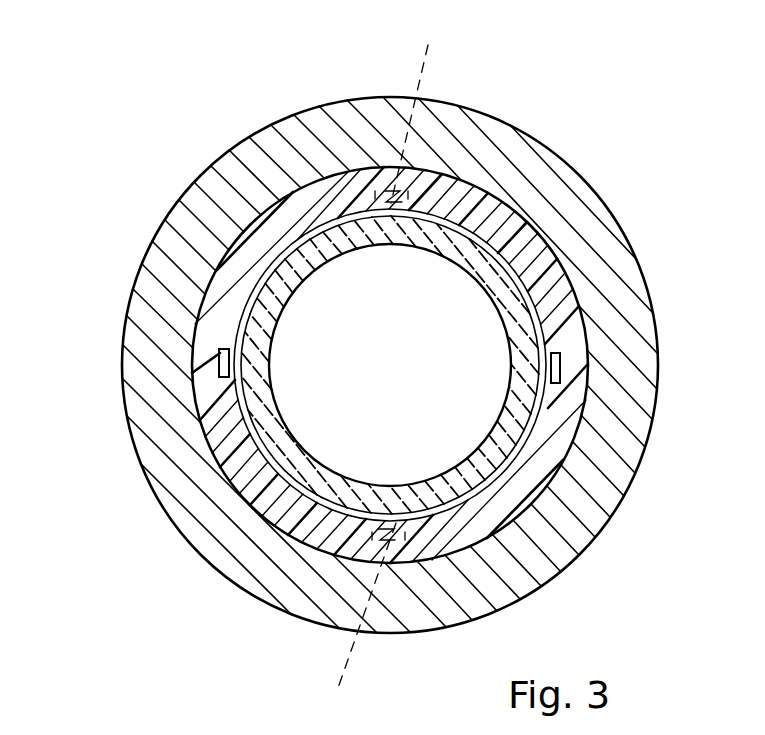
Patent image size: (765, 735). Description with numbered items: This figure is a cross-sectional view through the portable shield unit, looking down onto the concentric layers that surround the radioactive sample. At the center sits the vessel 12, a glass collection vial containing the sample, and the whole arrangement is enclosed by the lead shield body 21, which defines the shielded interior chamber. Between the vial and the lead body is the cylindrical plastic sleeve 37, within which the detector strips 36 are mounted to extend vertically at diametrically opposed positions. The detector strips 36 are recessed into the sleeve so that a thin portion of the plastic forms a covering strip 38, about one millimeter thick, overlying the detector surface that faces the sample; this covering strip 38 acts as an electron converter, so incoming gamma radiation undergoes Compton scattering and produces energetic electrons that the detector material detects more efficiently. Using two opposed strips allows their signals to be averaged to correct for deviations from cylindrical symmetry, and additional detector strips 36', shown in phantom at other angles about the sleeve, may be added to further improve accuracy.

The vessel 12 is at (286, 361).
The shield body 21 is at (185, 185).
The plastic sleeve 37 is at (203, 301).
The detector strips 36 is at (385, 392).
The additional detector strips 36' is at (388, 365).
The covering strip 38 is at (232, 387).